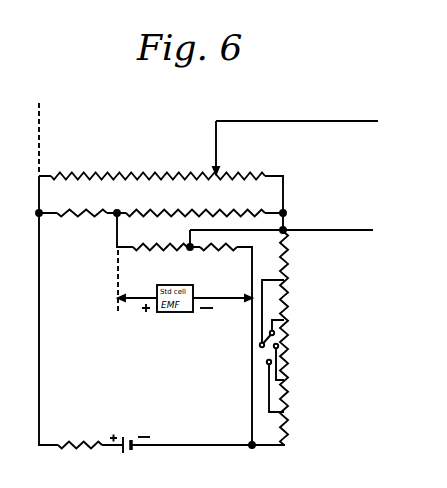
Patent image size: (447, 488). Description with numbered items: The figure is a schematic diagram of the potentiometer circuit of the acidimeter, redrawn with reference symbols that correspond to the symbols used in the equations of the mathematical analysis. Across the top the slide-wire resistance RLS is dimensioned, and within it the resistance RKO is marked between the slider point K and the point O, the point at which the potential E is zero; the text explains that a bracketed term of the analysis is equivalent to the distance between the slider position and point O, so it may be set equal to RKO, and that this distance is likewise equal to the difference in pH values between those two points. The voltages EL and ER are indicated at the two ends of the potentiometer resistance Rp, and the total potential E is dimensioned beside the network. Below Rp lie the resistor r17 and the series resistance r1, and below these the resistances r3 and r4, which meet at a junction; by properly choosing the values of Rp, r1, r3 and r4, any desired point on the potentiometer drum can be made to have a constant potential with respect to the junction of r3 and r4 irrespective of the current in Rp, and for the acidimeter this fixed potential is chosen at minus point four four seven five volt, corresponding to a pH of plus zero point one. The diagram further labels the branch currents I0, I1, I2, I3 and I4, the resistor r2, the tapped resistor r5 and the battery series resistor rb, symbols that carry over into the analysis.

The slide-wire resistance R_LS RLS is at (216, 121).
The resistance between the slider position and point O RKO is at (180, 147).
The point K on slide wire K is at (106, 173).
The point O is at (180, 173).
The voltage E_L EL is at (56, 173).
The voltage E_R ER is at (263, 174).
The potential E is at (332, 121).
The potentiometer resistance Rp is at (158, 185).
The current I_1 I1 is at (153, 188).
The resistor r17 is at (82, 206).
The resistance r1 is at (195, 213).
The current I_2 I2 is at (100, 223).
The current I_3 I3 is at (200, 225).
The current I_4 I4 is at (125, 223).
The resistor r2 is at (236, 227).
The resistance r3 is at (160, 257).
The resistance r4 is at (218, 257).
The tapped resistor r5 is at (289, 271).
The current I_0 I0 is at (33, 262).
The battery series resistor rb is at (80, 445).